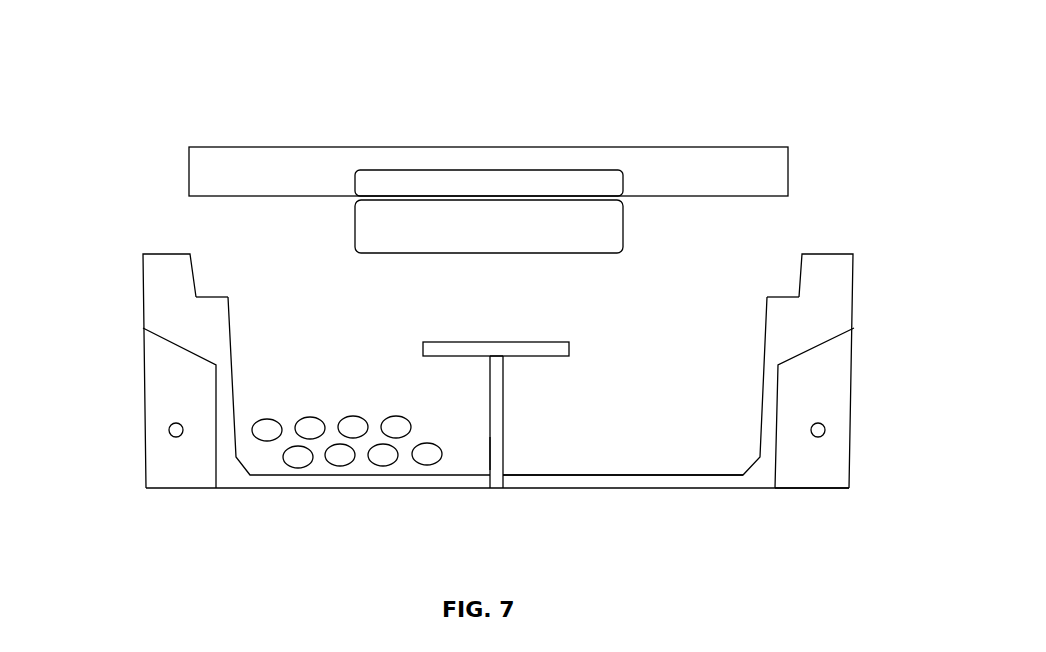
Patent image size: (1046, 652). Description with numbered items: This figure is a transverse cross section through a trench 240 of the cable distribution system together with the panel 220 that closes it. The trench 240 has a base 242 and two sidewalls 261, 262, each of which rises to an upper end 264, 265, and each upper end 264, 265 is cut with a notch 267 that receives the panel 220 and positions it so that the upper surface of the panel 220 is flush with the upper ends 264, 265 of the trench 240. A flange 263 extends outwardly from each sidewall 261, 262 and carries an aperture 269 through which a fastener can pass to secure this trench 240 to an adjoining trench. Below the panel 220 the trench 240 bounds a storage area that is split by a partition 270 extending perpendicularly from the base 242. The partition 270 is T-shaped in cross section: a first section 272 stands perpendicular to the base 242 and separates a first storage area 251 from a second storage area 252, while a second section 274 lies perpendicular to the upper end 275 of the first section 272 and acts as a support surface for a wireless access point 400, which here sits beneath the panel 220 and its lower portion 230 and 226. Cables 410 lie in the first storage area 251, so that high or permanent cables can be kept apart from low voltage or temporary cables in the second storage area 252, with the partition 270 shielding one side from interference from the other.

The panel 220 is at (684, 93).
The upper plate 226 is at (263, 196).
The upper electrode 230 is at (587, 175).
The wireless access point 400 is at (623, 218).
The trench 240 is at (103, 279).
The upper end 264 is at (170, 254).
The upper end 265 is at (832, 254).
The notch 267 is at (210, 297).
The base 242 is at (590, 480).
The sidewall 261 is at (223, 380).
The sidewall 262 is at (768, 380).
The aperture 269 is at (825, 427).
The flange 263 is at (840, 473).
The partition 270 is at (503, 406).
The second section 274 is at (539, 348).
The upper end 275 is at (495, 370).
The first section 272 is at (495, 437).
The first storage area 251 is at (393, 384).
The second storage area 252 is at (676, 399).
The cables 410 is at (268, 441).